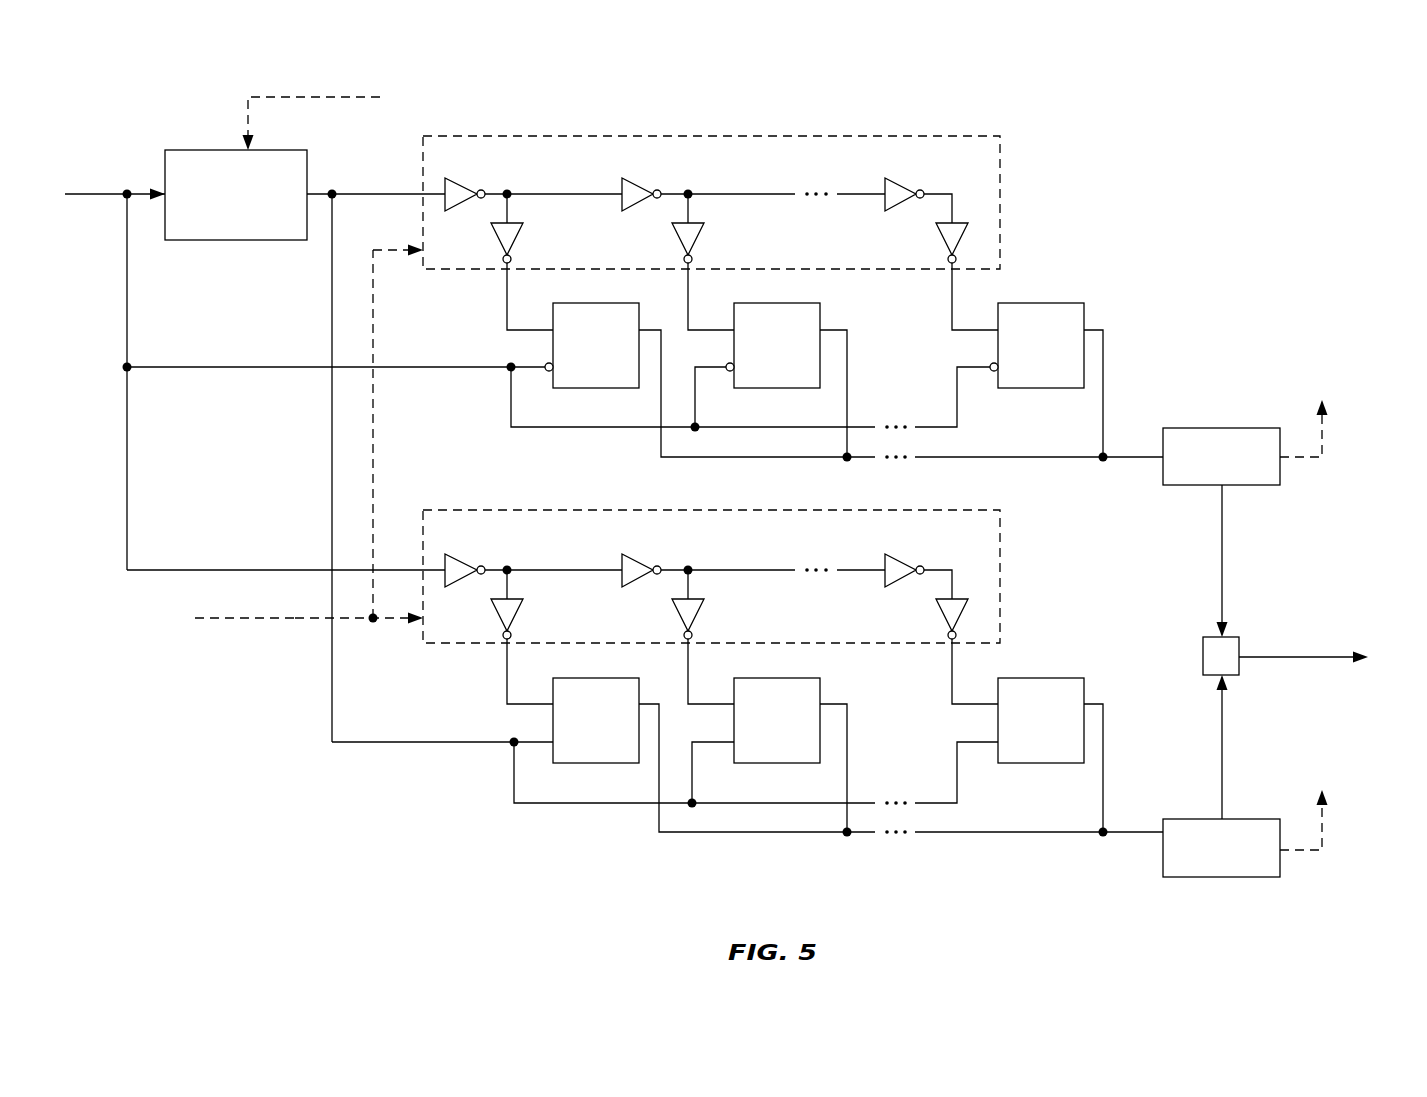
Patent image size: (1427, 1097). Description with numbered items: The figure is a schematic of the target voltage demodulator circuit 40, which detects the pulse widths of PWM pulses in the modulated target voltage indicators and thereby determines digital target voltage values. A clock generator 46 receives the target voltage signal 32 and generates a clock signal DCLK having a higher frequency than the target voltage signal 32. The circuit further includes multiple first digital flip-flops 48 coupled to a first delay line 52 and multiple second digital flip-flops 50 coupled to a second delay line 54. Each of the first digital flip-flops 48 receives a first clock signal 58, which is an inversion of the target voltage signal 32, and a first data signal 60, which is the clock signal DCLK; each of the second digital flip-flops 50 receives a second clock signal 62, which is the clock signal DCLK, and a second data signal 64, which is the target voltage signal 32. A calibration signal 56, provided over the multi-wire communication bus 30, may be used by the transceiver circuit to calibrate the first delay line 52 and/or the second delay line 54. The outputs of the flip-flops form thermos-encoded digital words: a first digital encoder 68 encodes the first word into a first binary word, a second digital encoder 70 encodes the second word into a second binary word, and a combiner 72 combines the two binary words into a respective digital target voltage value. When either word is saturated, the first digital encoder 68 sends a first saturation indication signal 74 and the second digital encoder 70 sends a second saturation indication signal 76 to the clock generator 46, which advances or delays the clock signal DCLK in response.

The target voltage demodulator circuit 40 is at (1279, 98).
The target voltage signal 32 is at (102, 198).
The clock generator 46 is at (248, 226).
The first saturation indication signal 74 is at (337, 97).
The second saturation indication signal 76 is at (337, 97).
The first delay line 52 is at (988, 166).
The second delay line 54 is at (988, 540).
The first digital flip-flops 48 is at (632, 381).
The second digital flip-flops 50 is at (632, 756).
The first data signal 60 is at (530, 332).
The second data signal 64 is at (526, 707).
The first clock signal 58 is at (394, 368).
The second clock signal 62 is at (423, 742).
The calibration signal 56 is at (250, 621).
The multi-wire communication bus 30 is at (306, 620).
The first digital encoder 68 is at (1233, 481).
The second digital encoder 70 is at (1233, 872).
The combiner 72 is at (1203, 657).